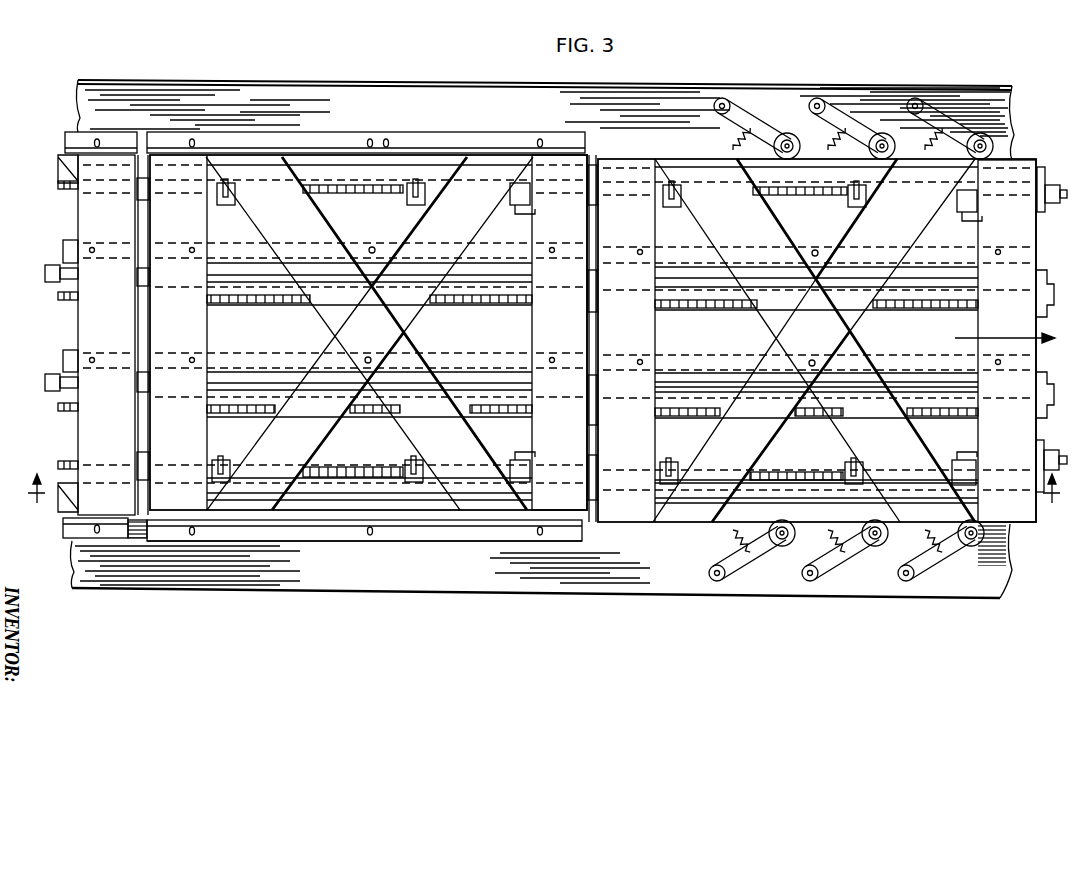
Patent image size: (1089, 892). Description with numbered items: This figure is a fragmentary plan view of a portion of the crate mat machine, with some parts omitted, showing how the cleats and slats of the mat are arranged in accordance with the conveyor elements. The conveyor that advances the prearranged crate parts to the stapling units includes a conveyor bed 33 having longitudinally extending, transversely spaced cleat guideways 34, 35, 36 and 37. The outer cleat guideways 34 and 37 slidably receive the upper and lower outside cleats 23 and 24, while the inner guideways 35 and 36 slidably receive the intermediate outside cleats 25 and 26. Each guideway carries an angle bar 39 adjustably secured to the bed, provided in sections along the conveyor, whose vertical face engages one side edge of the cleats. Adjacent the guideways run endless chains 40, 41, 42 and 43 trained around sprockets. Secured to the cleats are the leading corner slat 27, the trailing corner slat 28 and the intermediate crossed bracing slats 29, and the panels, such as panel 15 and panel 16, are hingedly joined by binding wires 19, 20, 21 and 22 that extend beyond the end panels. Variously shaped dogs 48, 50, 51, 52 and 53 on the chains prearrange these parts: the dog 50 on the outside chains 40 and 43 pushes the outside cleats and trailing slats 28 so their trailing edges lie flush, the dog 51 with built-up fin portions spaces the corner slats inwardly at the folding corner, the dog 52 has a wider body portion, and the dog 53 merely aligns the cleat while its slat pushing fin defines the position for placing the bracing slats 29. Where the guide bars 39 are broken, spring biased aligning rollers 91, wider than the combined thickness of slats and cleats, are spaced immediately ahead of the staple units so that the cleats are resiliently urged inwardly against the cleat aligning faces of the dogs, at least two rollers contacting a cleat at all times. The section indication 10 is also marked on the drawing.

The section line 10 is at (545, 509).
The panel 15 is at (646, 526).
The panel 16 is at (394, 524).
The binding wire 19 is at (812, 158).
The binding wire 20 is at (855, 270).
The binding wire 21 is at (875, 380).
The binding wire 22 is at (797, 500).
The upper outside cleat 23 is at (417, 163).
The lower outside cleat 24 is at (310, 515).
The intermediate outside cleat 25 is at (683, 268).
The intermediate outside cleat 26 is at (490, 375).
The corner slat 27 is at (80, 320).
The corner slat 28 is at (206, 328).
The intermediate crossed bracing slat 29 is at (402, 236).
The conveyor bed 33 is at (334, 84).
The cleat guideway 34 is at (387, 146).
The cleat guideway 35 is at (258, 256).
The cleat guideway 36 is at (244, 358).
The cleat guideway 37 is at (278, 524).
The angle bar 39 is at (262, 135).
The endless chain 40 is at (60, 185).
The endless chain 41 is at (60, 297).
The endless chain 42 is at (60, 405).
The endless chain 43 is at (60, 462).
The dog 48 is at (146, 302).
The dog 50 is at (598, 200).
The dog 51 is at (139, 195).
The dog 52 is at (512, 210).
The dog 53 is at (850, 464).
The spring biased aligning roller 91 is at (1006, 142).